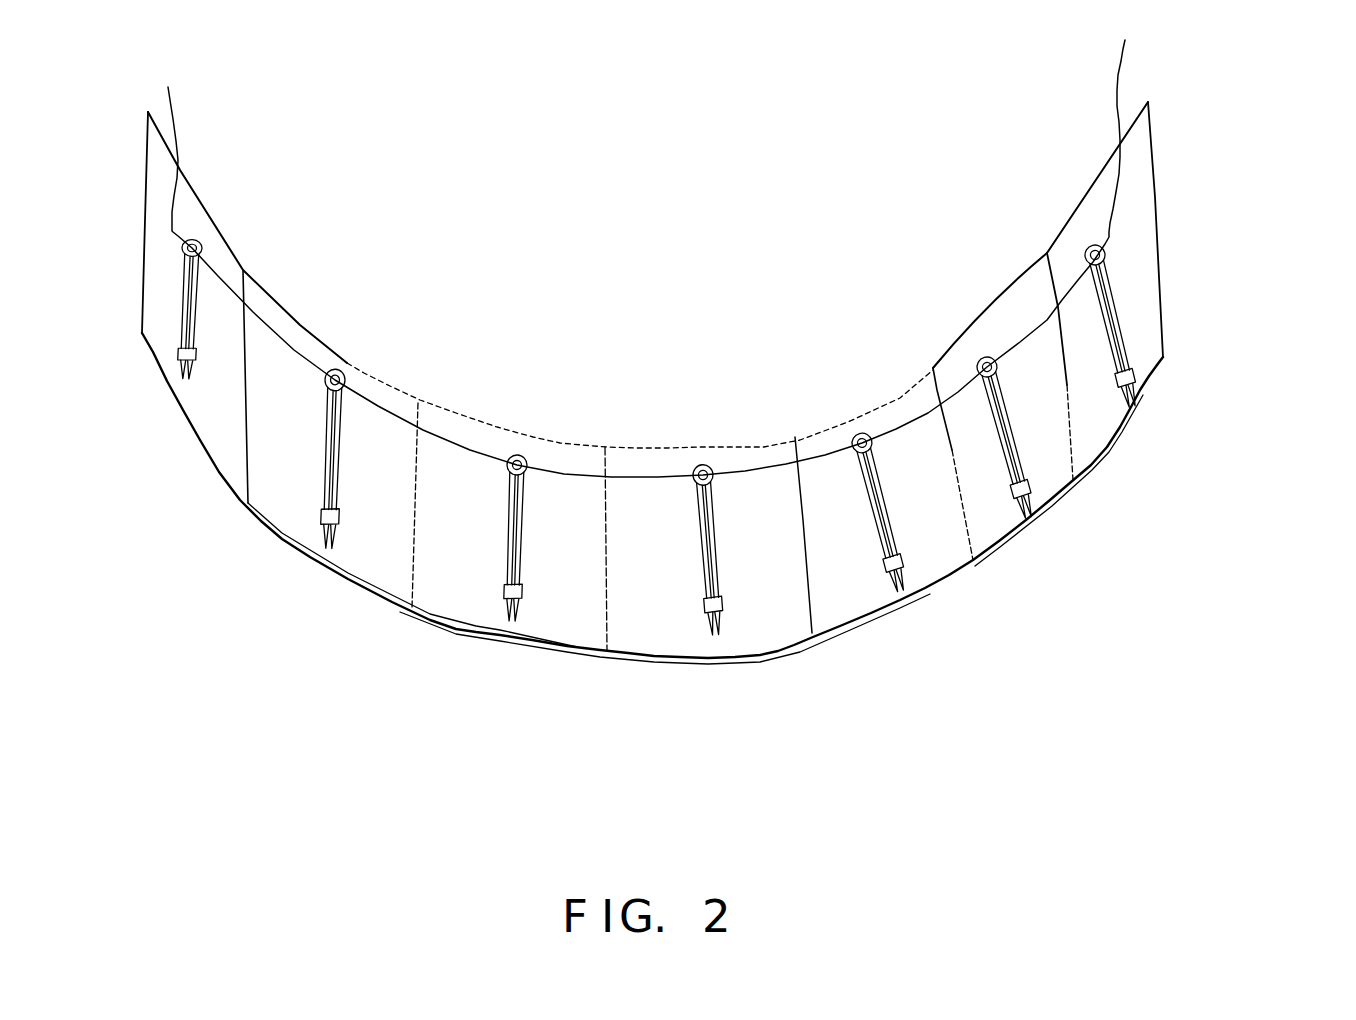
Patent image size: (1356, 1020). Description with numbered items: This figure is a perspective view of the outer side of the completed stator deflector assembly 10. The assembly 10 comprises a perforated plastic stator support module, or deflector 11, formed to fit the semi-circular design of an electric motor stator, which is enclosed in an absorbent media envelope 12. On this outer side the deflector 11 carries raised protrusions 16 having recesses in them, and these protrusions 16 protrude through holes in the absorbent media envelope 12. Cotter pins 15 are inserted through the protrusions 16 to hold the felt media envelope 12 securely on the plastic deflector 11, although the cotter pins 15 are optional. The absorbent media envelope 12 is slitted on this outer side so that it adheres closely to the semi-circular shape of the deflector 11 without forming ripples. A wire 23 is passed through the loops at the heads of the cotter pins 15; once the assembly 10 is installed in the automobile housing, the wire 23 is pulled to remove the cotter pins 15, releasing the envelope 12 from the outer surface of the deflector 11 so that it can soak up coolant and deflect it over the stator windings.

The stator deflector assembly 10 is at (1194, 187).
The stator support module (deflector) 11 is at (858, 627).
The absorbent media envelope 12 is at (1157, 277).
The cotter pins 15 is at (1030, 443).
The raised protrusions 16 is at (1137, 370).
The wire 23 is at (1113, 92).